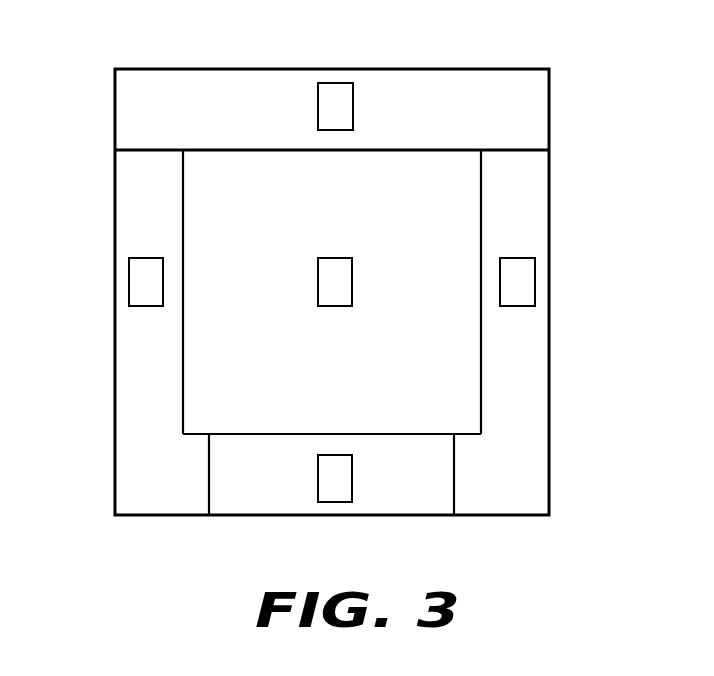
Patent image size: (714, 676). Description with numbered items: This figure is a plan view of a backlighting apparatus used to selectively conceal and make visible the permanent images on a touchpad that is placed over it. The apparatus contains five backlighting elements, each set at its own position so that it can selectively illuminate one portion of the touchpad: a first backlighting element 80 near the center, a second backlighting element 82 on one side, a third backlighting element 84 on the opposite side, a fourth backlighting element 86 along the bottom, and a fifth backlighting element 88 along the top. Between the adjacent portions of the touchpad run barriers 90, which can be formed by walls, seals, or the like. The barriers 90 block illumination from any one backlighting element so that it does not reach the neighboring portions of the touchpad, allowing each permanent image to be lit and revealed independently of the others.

The first backlighting element 80 is at (352, 258).
The second backlighting element 82 is at (129, 272).
The third backlighting element 84 is at (535, 257).
The fourth backlighting element 86 is at (318, 482).
The fifth backlighting element 88 is at (353, 100).
The barriers 90 is at (243, 149).